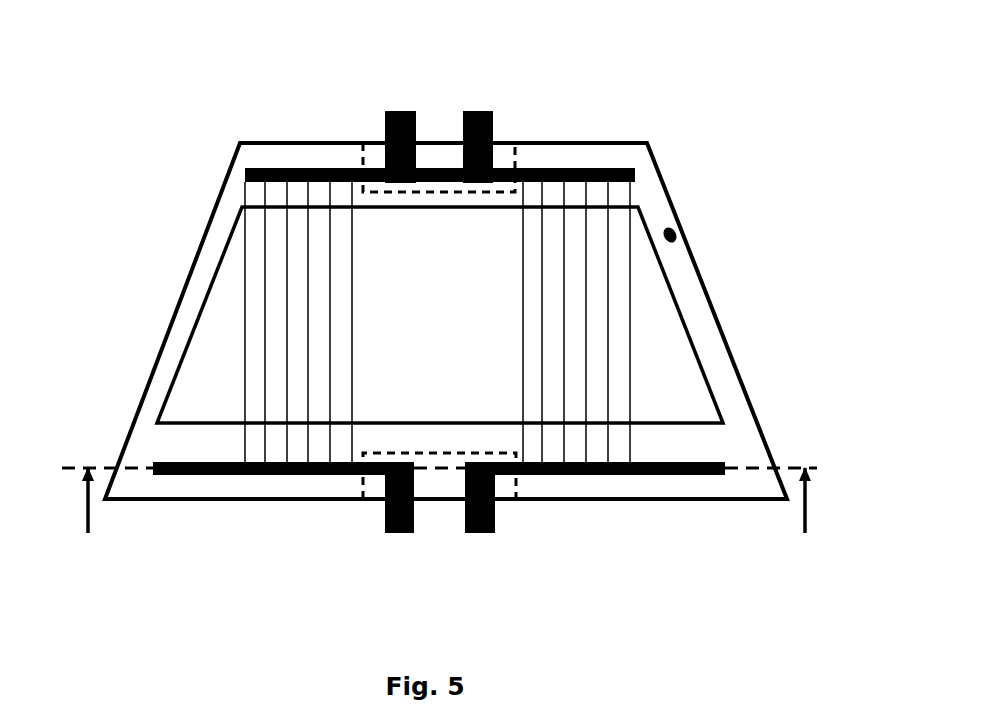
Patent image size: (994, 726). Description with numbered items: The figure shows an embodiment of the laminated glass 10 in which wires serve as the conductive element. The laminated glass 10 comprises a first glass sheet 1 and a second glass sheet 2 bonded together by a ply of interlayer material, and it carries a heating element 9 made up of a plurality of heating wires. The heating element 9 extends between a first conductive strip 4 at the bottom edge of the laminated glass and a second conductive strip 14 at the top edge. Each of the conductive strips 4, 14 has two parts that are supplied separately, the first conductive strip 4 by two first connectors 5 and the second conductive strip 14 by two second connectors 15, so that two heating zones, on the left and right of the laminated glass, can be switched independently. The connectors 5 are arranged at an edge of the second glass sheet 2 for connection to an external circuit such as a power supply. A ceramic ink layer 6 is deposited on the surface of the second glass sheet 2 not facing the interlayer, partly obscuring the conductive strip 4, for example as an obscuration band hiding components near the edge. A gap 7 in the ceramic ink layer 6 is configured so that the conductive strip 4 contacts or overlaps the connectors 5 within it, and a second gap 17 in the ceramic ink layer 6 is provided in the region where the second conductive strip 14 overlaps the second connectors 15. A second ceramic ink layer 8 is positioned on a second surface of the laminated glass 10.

The laminated glass 10 is at (152, 63).
The first glass sheet 1 is at (427, 321).
The second glass sheet 2 is at (203, 240).
The second conductive strip 14 is at (273, 168).
The second connectors 15 is at (402, 110).
The second gap 17 is at (513, 140).
The ceramic ink layer 6 is at (730, 209).
The second ceramic ink layer 8 is at (675, 230).
The heating element 9 is at (633, 353).
The conductive strip 4 is at (180, 477).
The connector 5 is at (402, 533).
The gap 7 is at (520, 502).